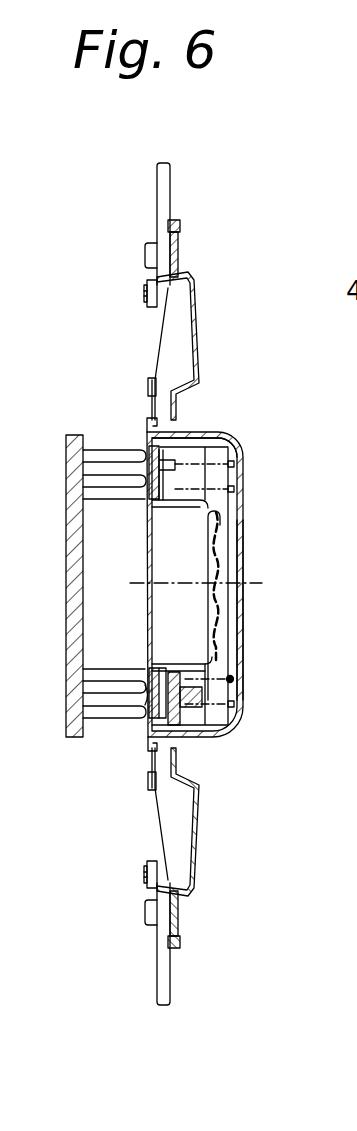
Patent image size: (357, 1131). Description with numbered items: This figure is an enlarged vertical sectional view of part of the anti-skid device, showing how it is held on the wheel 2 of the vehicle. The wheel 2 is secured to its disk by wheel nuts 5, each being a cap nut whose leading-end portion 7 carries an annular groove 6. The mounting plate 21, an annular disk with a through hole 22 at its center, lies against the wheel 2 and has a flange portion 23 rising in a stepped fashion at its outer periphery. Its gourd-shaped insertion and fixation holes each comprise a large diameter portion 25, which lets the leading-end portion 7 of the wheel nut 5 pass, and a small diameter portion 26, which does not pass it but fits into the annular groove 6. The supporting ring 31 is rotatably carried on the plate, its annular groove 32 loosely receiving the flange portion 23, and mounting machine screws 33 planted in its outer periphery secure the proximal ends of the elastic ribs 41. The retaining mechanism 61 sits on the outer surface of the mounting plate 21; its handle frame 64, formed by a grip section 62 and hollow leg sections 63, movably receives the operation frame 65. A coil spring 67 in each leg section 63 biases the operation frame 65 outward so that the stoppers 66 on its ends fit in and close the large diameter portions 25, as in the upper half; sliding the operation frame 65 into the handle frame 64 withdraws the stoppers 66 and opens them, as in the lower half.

The wheel 2 is at (68, 557).
The wheel nut 5 is at (108, 494).
The annular groove 6 is at (140, 698).
The leading-end portion 7 is at (163, 662).
The mounting plate 21 is at (145, 429).
The through hole 22 is at (148, 606).
The flange portion 23 is at (170, 760).
The large diameter portion 25 is at (140, 502).
The small diameter portion 26 is at (145, 672).
The supporting ring 31 is at (198, 320).
The annular groove 32 is at (148, 385).
The mounting machine screw 33 is at (145, 292).
The rib 41 is at (165, 193).
The retaining mechanism 61 is at (224, 437).
The grip section 62 is at (246, 648).
The leg section 63 is at (200, 430).
The handle frame 64 is at (250, 559).
The operation frame 65 is at (235, 602).
The stopper 66 is at (85, 471).
The coil spring 67 is at (235, 466).